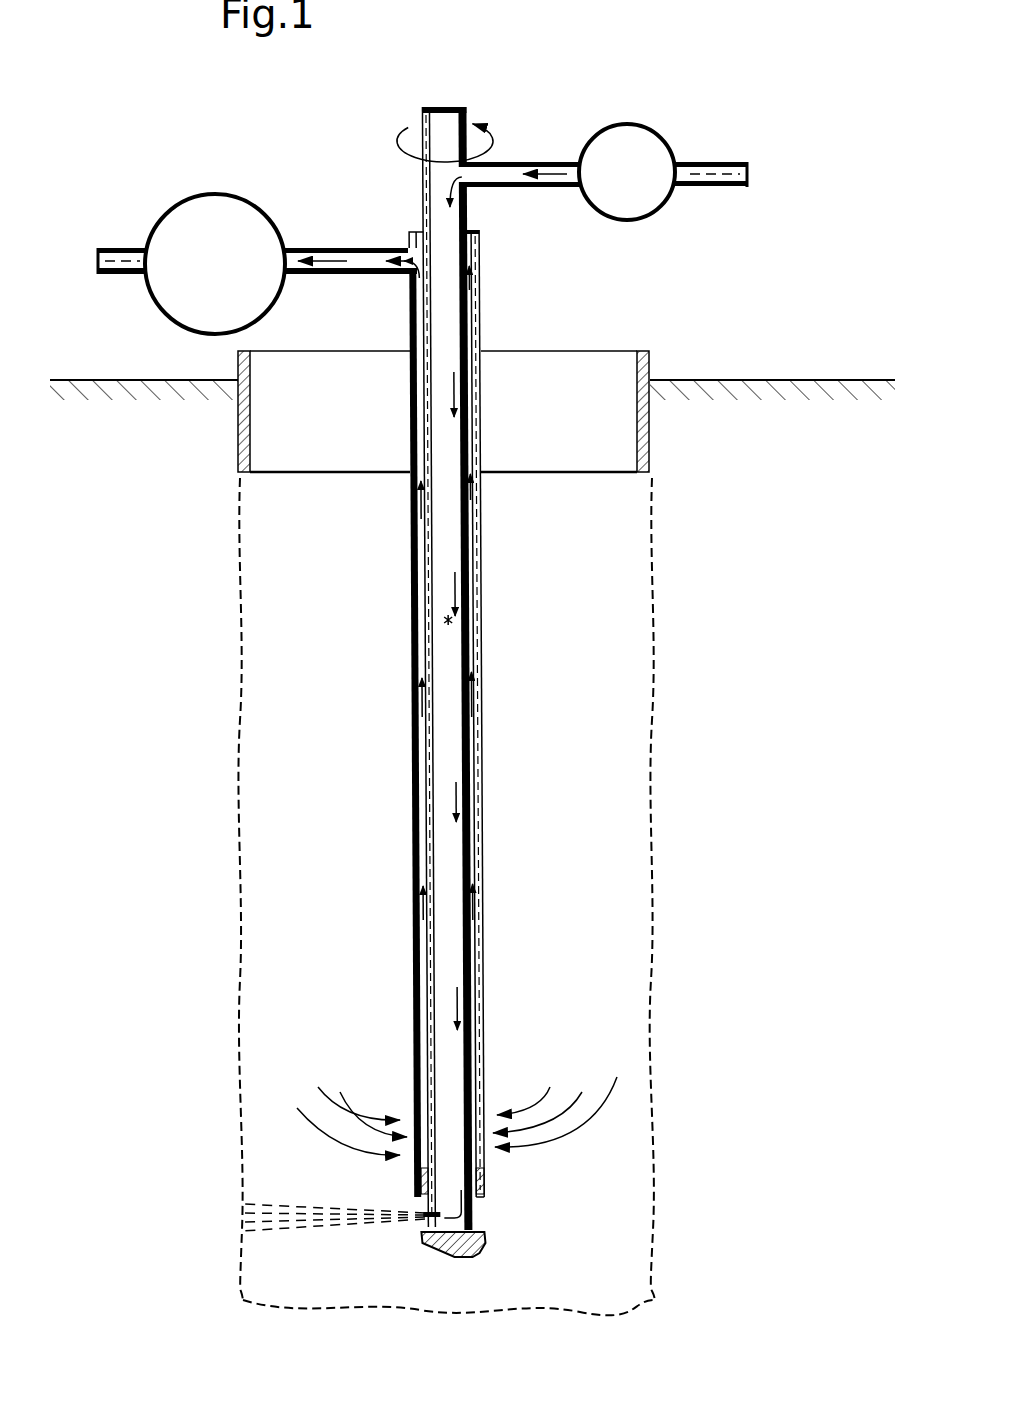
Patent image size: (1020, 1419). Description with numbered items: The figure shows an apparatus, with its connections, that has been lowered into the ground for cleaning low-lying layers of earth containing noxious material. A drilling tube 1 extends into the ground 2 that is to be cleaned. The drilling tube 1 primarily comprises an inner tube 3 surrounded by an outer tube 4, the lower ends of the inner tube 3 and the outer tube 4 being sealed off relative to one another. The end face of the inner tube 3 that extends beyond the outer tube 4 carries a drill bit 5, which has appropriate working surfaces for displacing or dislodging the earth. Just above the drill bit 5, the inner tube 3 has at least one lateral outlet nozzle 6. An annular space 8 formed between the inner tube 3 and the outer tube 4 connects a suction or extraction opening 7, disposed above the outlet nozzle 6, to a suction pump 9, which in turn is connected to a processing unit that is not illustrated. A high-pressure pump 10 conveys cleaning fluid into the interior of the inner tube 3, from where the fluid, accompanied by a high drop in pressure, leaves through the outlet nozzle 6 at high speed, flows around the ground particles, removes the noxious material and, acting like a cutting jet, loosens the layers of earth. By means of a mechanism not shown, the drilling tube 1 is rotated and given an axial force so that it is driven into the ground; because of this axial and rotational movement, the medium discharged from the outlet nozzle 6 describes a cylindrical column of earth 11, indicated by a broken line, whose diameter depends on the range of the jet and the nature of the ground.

The drilling tube 1 is at (487, 913).
The ground 2 is at (720, 420).
The inner tube 3 is at (426, 332).
The outer tube 4 is at (484, 331).
The drill bit 5 is at (458, 1243).
The outlet nozzle 6 is at (414, 1220).
The suction opening 7 is at (484, 1157).
The annular space 8 is at (484, 397).
The suction pump 9 is at (206, 218).
The high-pressure pump 10 is at (634, 156).
The column of earth 11 is at (655, 667).